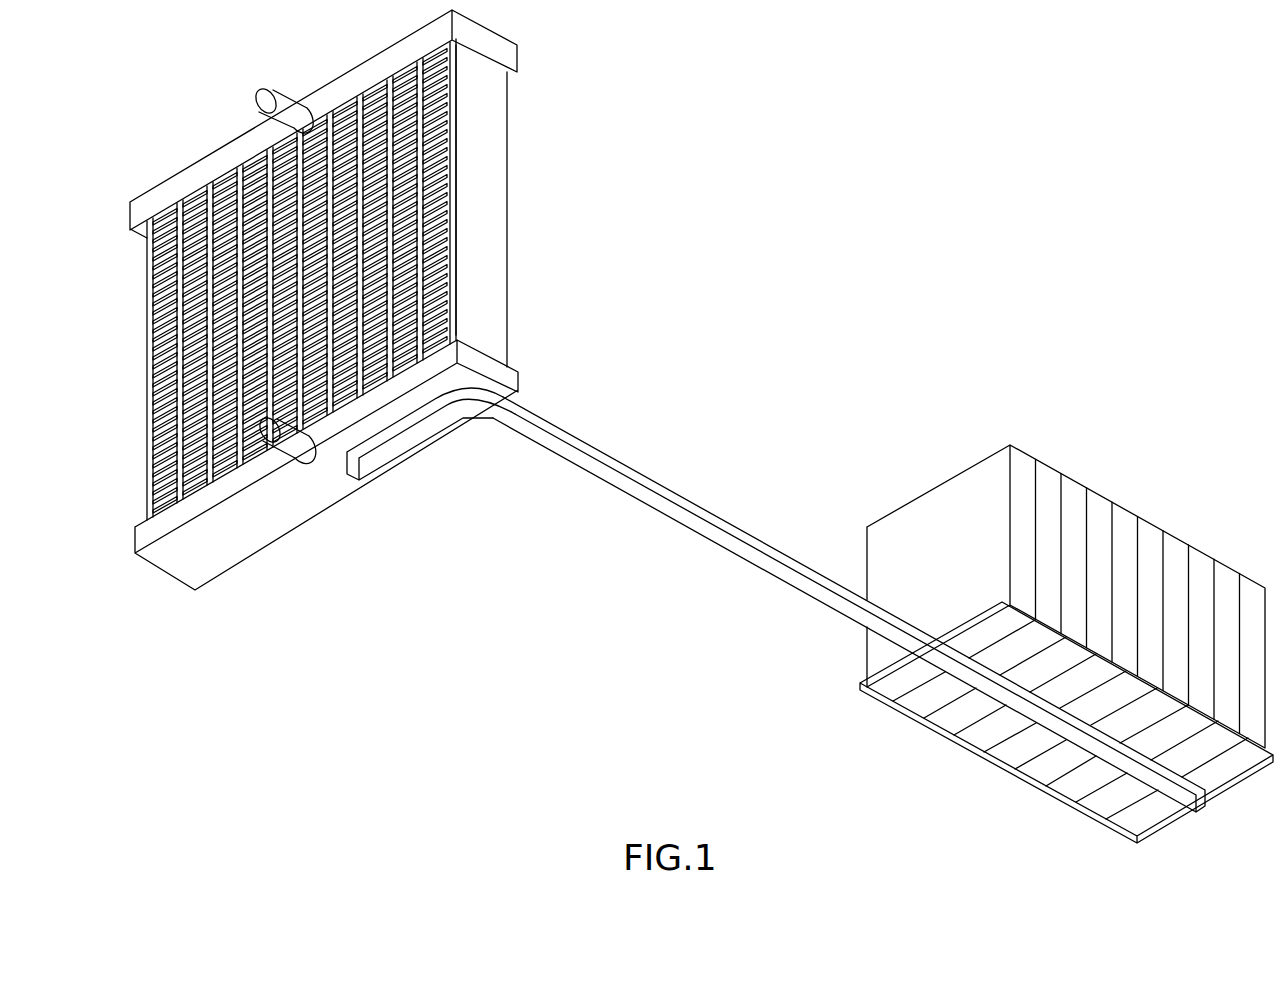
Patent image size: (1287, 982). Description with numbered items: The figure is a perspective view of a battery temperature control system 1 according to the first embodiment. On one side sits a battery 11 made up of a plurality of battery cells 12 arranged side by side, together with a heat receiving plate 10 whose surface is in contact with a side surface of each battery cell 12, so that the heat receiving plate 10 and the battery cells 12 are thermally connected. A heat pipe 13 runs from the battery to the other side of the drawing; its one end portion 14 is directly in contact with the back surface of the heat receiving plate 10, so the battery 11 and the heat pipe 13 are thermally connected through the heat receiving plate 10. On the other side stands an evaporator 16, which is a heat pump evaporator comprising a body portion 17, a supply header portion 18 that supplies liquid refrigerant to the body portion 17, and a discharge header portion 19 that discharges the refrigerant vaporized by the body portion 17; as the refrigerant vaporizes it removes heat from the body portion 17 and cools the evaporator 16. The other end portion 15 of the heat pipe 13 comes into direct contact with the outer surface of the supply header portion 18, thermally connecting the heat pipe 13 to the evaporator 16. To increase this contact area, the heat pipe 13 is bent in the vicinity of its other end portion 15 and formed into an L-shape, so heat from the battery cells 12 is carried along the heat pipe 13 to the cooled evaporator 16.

The battery temperature control system 1 is at (818, 258).
The heat receiving plate 10 is at (1240, 781).
The battery 11 is at (1273, 394).
The battery cell 12 is at (1018, 475).
The heat pipe 13 is at (726, 532).
The one end portion 14 is at (1127, 764).
The other end portion 15 is at (407, 438).
The evaporator 16 is at (507, 164).
The body portion 17 is at (495, 288).
The supply header portion 18 is at (283, 517).
The discharge header portion 19 is at (366, 77).